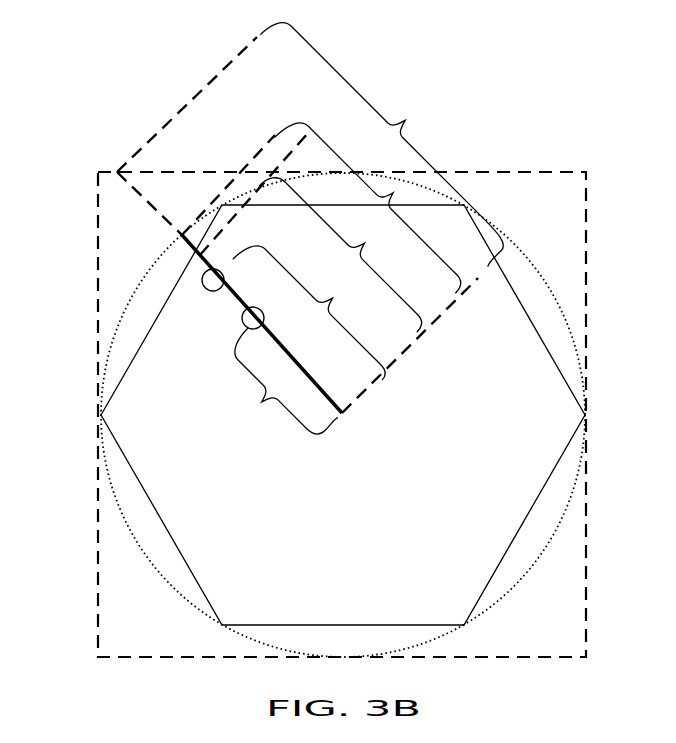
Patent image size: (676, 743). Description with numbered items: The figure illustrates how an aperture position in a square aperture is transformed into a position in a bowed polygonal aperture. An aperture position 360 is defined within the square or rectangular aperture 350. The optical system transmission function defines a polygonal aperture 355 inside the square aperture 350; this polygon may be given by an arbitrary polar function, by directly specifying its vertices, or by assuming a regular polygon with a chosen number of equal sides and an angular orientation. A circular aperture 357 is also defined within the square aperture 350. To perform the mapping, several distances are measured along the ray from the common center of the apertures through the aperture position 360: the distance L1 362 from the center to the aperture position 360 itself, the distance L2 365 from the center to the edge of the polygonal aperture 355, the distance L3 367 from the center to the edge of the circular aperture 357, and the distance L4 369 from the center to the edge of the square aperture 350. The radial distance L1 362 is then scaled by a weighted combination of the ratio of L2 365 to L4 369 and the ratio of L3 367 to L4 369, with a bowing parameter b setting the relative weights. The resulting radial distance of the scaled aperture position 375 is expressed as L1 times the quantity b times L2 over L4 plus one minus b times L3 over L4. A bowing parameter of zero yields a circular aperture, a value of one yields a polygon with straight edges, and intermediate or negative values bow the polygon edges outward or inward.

The square aperture 350 is at (98, 611).
The polygonal aperture 355 is at (155, 315).
The circular aperture 357 is at (150, 268).
The aperture position 360 is at (208, 288).
The distance L1 362 is at (315, 311).
The distance L2 365 is at (347, 250).
The distance L3 367 is at (374, 206).
The distance L4 369 is at (389, 136).
The radial distance of the scaled aperture position 375 is at (243, 413).